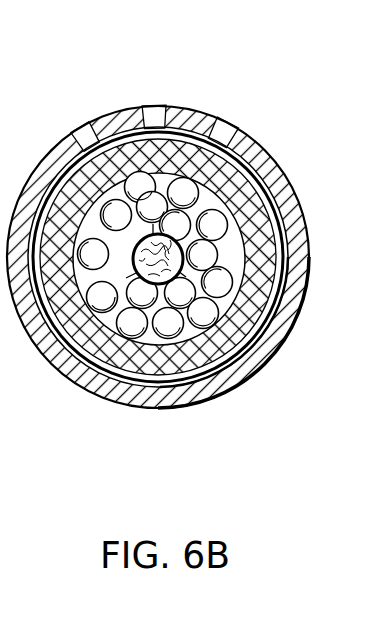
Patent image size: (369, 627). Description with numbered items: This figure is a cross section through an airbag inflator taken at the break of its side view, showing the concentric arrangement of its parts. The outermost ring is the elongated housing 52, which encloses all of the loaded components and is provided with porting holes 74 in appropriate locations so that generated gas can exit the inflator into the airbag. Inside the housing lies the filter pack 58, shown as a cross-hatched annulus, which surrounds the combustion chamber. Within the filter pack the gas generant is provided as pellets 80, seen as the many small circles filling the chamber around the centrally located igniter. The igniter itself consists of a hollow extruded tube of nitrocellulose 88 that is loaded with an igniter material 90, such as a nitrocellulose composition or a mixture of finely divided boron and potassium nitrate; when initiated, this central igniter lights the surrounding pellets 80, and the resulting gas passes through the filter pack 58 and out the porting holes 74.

The elongated housing 52 is at (114, 121).
The porting holes 74 is at (225, 133).
The filter pack 58 is at (245, 178).
The pellets 80 is at (268, 334).
The hollow extruded tube of nitrocellulose 88 is at (126, 278).
The igniter material 90 is at (186, 277).